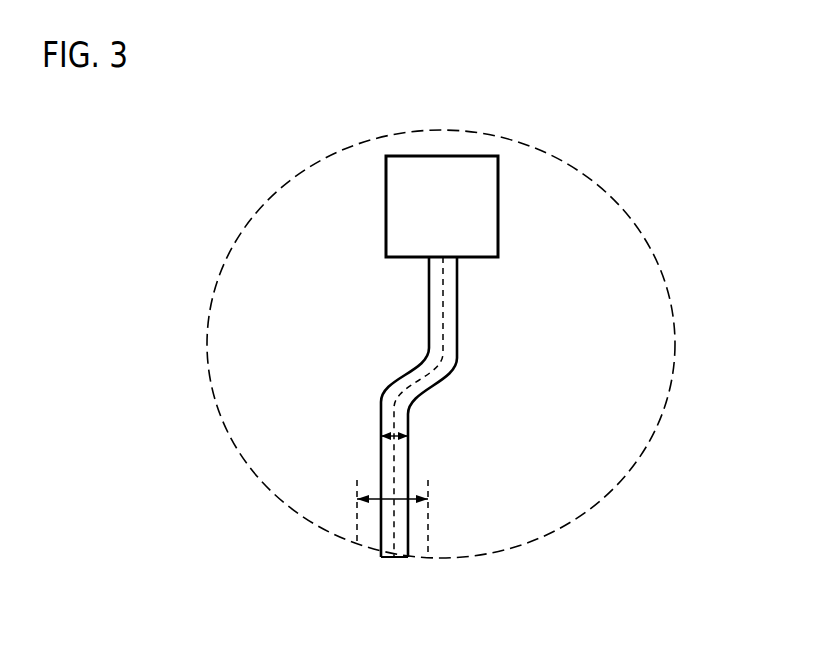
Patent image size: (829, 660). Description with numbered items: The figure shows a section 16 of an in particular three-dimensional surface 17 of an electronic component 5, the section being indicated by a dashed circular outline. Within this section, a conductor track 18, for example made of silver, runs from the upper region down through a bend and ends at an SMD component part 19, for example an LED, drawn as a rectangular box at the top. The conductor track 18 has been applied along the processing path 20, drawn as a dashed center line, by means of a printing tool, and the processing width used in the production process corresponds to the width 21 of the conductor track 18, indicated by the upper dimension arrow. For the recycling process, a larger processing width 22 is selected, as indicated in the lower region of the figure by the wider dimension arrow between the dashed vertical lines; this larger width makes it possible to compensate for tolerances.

The electronic component 5 is at (667, 155).
The section 16 is at (640, 455).
The surface 17 is at (560, 330).
The conductor track 18 is at (428, 300).
The SMD component part 19 is at (453, 155).
The processing path 20 is at (443, 320).
The width of the conductor track 21 is at (408, 426).
The larger processing width 22 is at (405, 497).